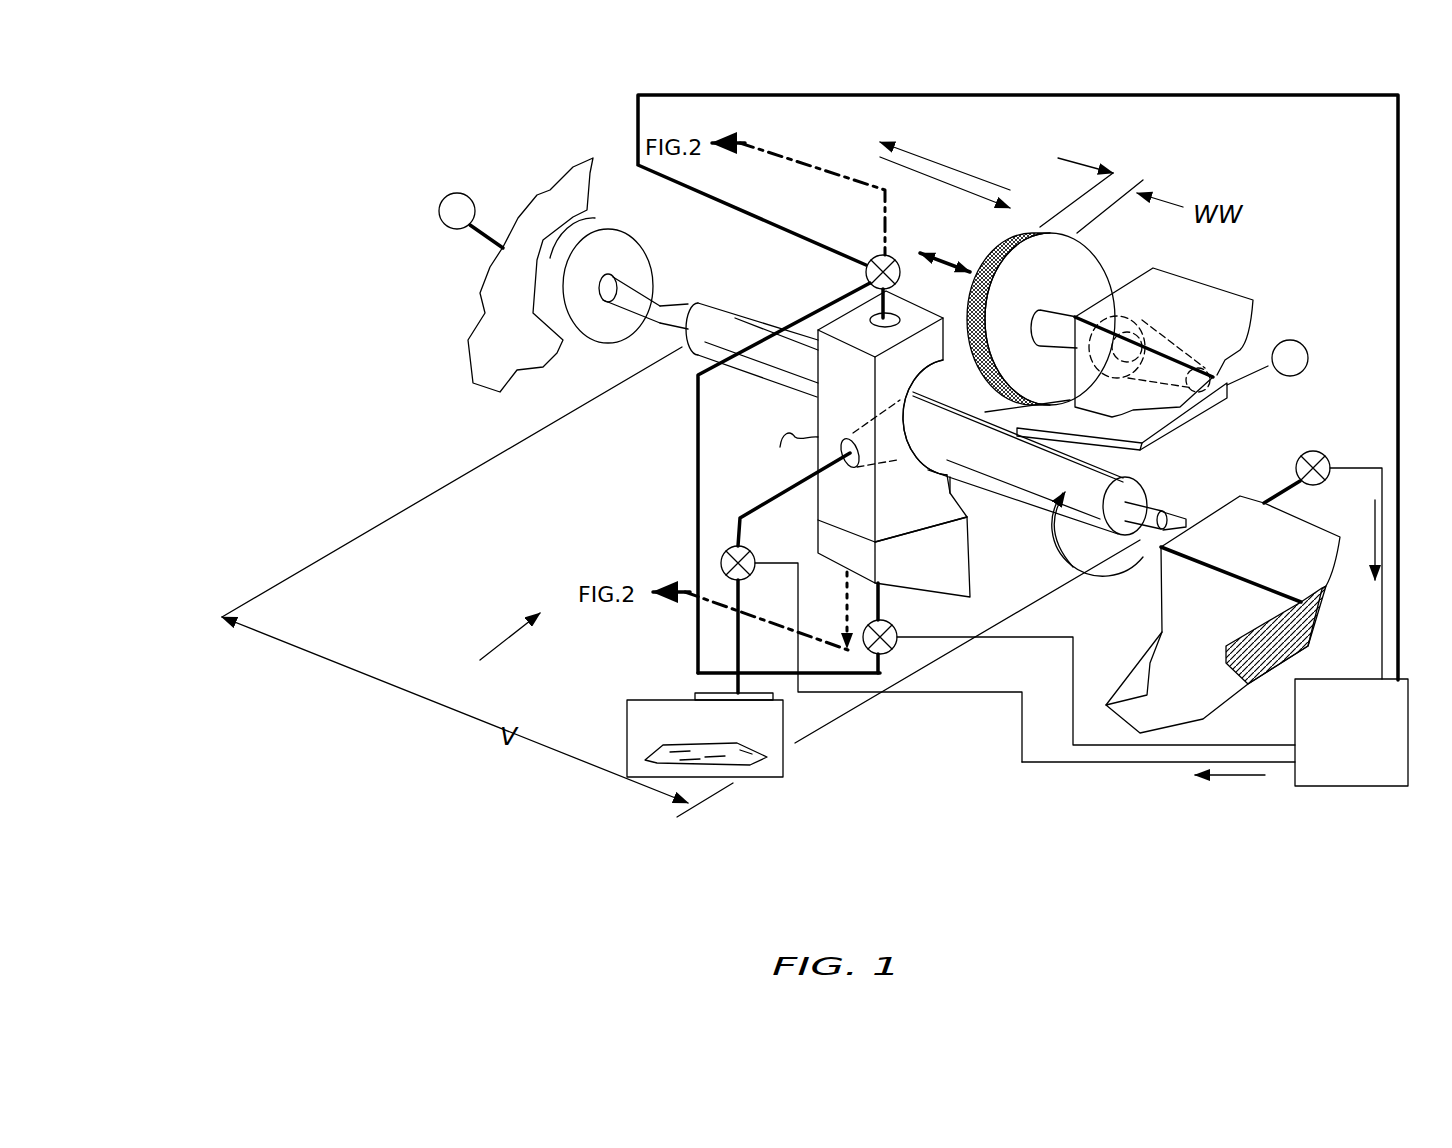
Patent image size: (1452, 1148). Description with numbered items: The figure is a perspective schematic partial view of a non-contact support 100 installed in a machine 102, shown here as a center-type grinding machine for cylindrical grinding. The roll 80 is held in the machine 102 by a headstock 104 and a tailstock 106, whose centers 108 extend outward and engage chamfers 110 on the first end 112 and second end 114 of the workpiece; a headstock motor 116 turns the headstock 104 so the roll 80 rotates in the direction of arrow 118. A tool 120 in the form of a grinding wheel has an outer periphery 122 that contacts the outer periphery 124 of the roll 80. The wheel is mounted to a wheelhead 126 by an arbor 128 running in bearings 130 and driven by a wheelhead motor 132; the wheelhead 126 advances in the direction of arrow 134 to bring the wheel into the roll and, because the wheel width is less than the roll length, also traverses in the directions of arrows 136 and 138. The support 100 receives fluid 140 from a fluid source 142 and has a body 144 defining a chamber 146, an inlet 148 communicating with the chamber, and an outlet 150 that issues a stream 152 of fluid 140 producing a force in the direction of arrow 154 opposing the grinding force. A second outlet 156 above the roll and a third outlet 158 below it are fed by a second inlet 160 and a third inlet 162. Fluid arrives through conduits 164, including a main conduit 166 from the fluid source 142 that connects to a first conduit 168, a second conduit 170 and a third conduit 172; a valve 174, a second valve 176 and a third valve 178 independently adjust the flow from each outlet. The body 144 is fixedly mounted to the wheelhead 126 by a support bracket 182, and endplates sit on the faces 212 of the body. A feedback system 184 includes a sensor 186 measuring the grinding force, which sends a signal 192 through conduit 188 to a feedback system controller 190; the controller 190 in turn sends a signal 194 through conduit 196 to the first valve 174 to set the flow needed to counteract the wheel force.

The support 100 is at (410, 125).
The machine 102 is at (547, 210).
The headstock 104 is at (613, 232).
The tailstock 106 is at (1307, 603).
The centers 108 is at (633, 300).
The chamfers 110 is at (660, 307).
The first end 112 is at (667, 327).
The second end 114 is at (1155, 535).
The headstock motor 116 is at (452, 230).
The arrow 118 is at (1085, 570).
The tool 120 is at (1078, 265).
The outer periphery 122 is at (1030, 234).
The outer periphery 124 is at (1045, 475).
The wheelhead 126 is at (1223, 308).
The arbor 128 is at (1057, 320).
The bearings 130 is at (1138, 325).
The wheelhead motor 132 is at (1293, 340).
The arrow 134 is at (1215, 284).
The arrow 136 is at (940, 162).
The arrow 138 is at (950, 190).
The fluid 140 is at (733, 753).
The fluid source 142 is at (782, 758).
The body 144 is at (998, 598).
The chamber 146 is at (867, 427).
The inlet 148 is at (852, 470).
The outlet 150 is at (937, 438).
The stream 152 is at (990, 399).
The arrow 154 is at (515, 630).
The second outlet 156 is at (985, 392).
The third outlet 158 is at (965, 456).
The second inlet 160 is at (878, 313).
The third inlet 162 is at (897, 563).
The conduits 164 is at (852, 685).
The main conduit 166 is at (733, 686).
The first conduit 168 is at (763, 487).
The second conduit 170 is at (697, 420).
The third conduit 172 is at (790, 670).
The valve 174 is at (748, 553).
The second valve 176 is at (870, 258).
The third valve 178 is at (897, 637).
The support bracket 182 is at (1197, 414).
The feedback system 184 is at (1294, 798).
The sensor 186 is at (1313, 450).
The conduit 188 is at (1361, 557).
The feedback system controller 190 is at (1365, 775).
The signal 192 is at (1368, 518).
The signal 194 is at (1228, 783).
The conduit 196 is at (1124, 764).
The faces 212 is at (790, 451).
The roll 80 is at (1055, 537).